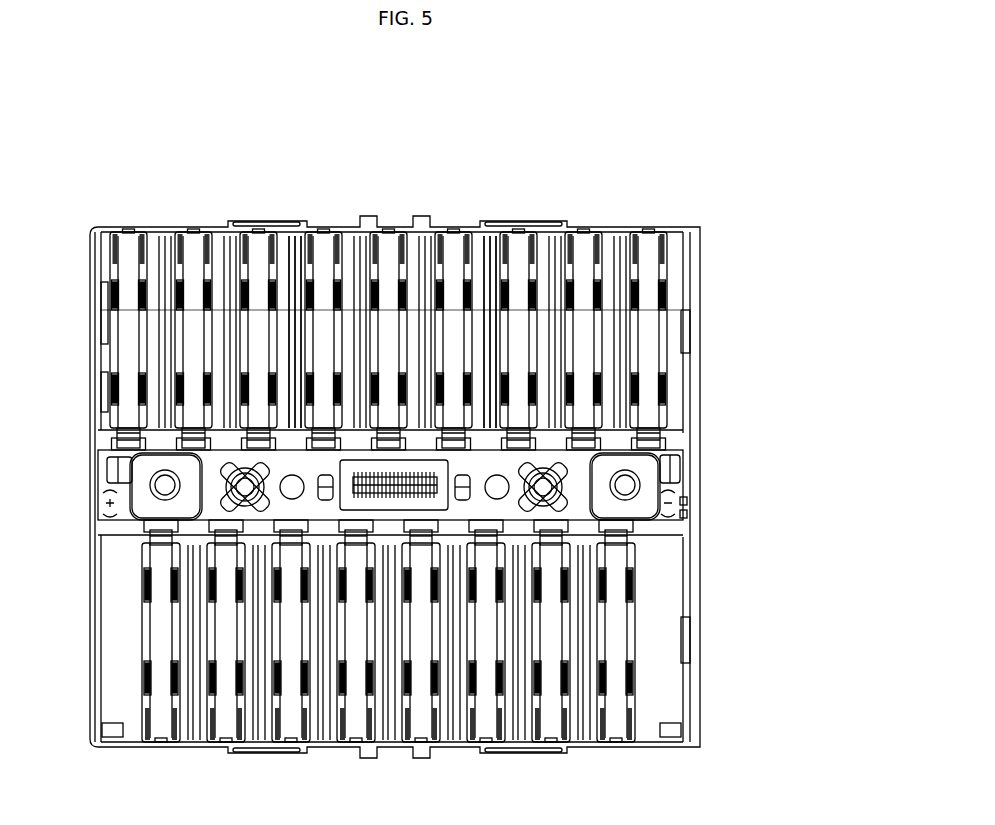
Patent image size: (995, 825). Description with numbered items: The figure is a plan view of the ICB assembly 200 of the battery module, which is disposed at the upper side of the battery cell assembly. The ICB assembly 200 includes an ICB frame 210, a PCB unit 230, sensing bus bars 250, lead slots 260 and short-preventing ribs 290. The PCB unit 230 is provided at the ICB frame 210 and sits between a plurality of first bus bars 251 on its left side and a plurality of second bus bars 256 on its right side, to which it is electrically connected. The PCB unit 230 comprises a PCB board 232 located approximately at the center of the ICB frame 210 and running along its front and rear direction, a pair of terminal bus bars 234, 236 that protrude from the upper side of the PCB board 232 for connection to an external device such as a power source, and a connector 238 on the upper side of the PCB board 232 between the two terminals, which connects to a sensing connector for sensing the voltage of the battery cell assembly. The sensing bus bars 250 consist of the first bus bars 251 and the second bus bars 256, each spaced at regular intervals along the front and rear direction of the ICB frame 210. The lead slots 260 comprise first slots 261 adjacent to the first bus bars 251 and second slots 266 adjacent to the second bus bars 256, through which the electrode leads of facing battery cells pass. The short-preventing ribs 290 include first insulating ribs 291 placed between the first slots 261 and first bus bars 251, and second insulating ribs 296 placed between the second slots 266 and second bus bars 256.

The ICB assembly 200 is at (100, 126).
The ICB frame 210 is at (90, 618).
The PCB unit 230 is at (713, 495).
The PCB board 232 is at (503, 508).
The terminal bus bar 234 is at (161, 487).
The terminal bus bar 236 is at (627, 485).
The connector 238 is at (433, 480).
The sensing bus bar 250 is at (518, 250).
The first bus bar 251 is at (324, 244).
The lead slot 260 is at (543, 259).
The first slot 261 is at (347, 256).
The short-preventing rib 290 is at (486, 245).
The first insulating rib 291 is at (292, 240).
The second bus bar 256 is at (297, 730).
The second slot 266 is at (321, 719).
The second insulating rib 296 is at (260, 731).